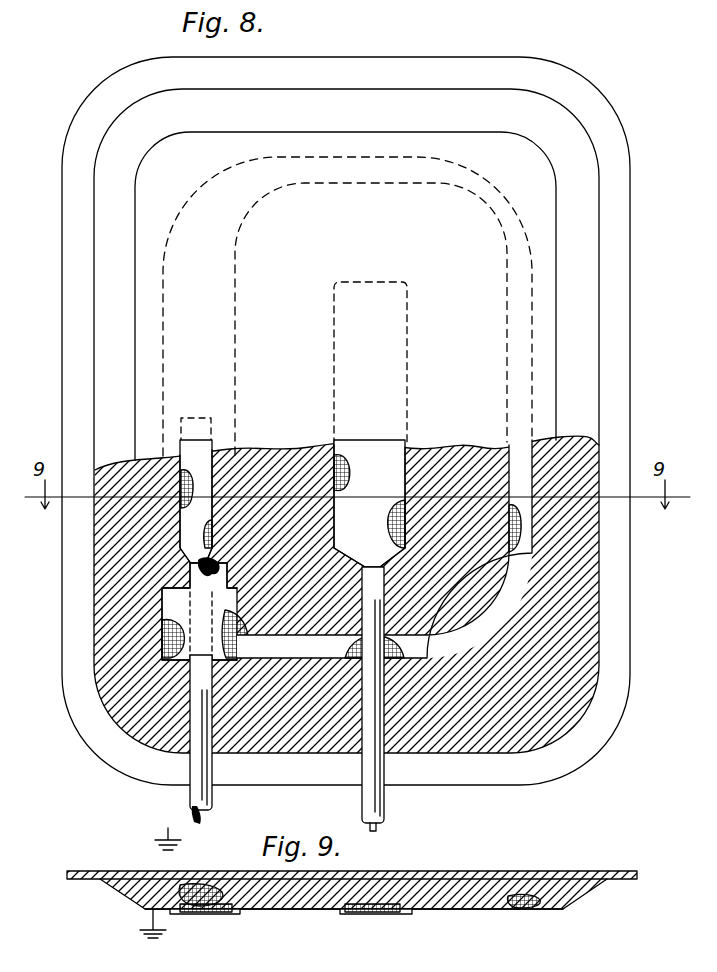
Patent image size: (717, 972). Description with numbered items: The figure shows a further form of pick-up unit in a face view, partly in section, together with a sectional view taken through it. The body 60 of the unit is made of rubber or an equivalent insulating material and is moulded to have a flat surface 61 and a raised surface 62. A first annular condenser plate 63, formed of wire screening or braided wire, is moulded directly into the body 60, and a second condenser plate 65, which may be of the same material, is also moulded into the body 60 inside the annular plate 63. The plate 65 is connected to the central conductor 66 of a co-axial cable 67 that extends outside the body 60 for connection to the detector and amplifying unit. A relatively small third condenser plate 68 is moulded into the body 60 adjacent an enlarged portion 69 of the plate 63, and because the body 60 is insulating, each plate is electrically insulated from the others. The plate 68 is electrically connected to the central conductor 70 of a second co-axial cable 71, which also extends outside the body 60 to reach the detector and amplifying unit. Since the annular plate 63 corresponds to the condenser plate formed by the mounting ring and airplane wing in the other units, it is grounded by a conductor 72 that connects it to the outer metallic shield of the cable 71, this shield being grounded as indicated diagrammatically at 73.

In FIG. 8, the body of pick-up unit 60 is at (441, 240).
In FIG. 9, the body of pick-up unit 60 is at (541, 849).
In FIG. 9, the flat surface 61 is at (425, 871).
In FIG. 9, the raised surface 62 is at (445, 910).
In FIG. 8, the first annular condenser plate 63 is at (522, 333).
In FIG. 9, the first annular condenser plate 63 is at (525, 910).
In FIG. 8, the second condenser plate 65 is at (385, 398).
In FIG. 9, the second condenser plate 65 is at (372, 913).
In FIG. 8, the central conductor 66 is at (350, 547).
In FIG. 8, the co-axial cable 67 is at (366, 772).
In FIG. 8, the third condenser plate 68 is at (200, 432).
In FIG. 9, the third condenser plate 68 is at (212, 888).
In FIG. 8, the enlarged portion 69 is at (215, 332).
In FIG. 9, the enlarged portion 69 is at (213, 914).
In FIG. 8, the central conductor 70 is at (198, 548).
In FIG. 8, the co-axial cable 71 is at (192, 778).
In FIG. 8, the conductor 72 is at (222, 590).
In FIG. 8, the ground 73 is at (194, 815).
In FIG. 9, the ground 73 is at (151, 921).